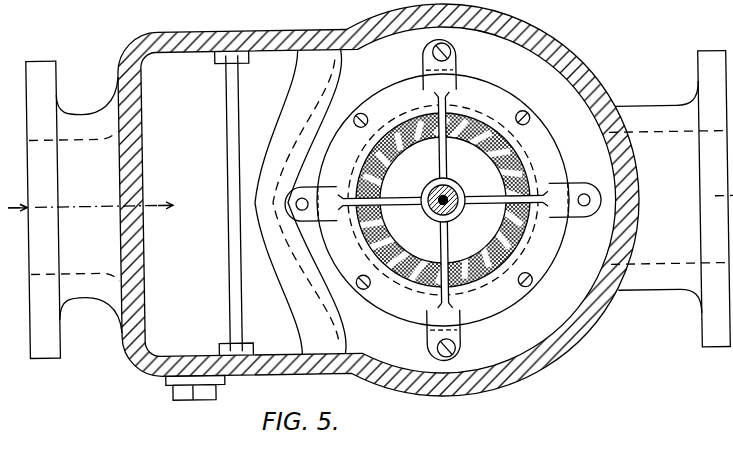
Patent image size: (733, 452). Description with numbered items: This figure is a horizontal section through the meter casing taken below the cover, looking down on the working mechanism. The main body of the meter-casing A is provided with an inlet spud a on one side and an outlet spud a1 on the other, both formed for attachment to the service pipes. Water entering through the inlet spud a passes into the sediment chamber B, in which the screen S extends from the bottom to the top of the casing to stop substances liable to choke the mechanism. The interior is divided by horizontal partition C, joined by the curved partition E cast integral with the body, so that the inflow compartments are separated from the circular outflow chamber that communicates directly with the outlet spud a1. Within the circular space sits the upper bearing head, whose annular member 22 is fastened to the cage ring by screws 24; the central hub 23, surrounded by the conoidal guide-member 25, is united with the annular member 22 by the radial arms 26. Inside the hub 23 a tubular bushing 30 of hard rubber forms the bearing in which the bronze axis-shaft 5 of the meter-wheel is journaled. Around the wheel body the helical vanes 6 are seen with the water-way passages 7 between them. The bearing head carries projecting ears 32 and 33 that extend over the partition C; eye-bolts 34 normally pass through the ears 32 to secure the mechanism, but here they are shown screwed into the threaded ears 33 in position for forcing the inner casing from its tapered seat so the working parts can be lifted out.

The main body of the meter-casing A is at (574, 328).
The sediment chamber B is at (167, 204).
The horizontal partition C is at (450, 200).
The curved partition E is at (279, 127).
The screen S is at (230, 153).
The inlet spud a is at (91, 209).
The outlet spud a1 is at (670, 199).
The axis-shaft 5 is at (428, 194).
The helical vanes 6 is at (401, 275).
The water-way passages 7 is at (514, 238).
The annular member 22 is at (452, 199).
The central hub 23 is at (449, 182).
The screws 24 is at (356, 115).
The conoidal guide-member 25 is at (436, 184).
The radial arms 26 is at (487, 202).
The tubular bushing 30 is at (437, 216).
The ears 32 is at (302, 195).
The ears 33 is at (459, 50).
The eye-bolts 34 is at (436, 56).